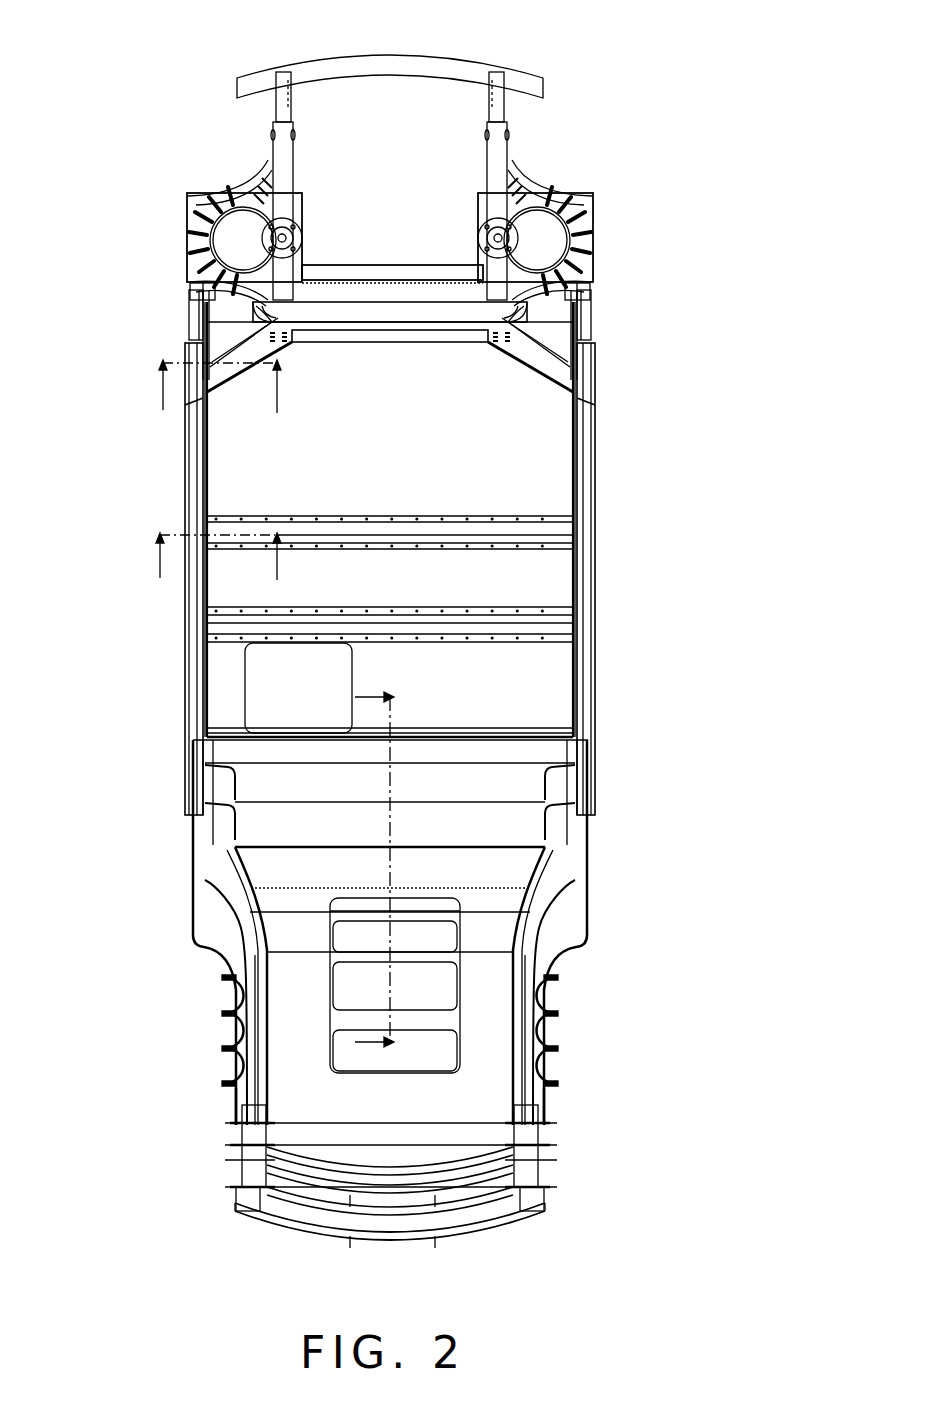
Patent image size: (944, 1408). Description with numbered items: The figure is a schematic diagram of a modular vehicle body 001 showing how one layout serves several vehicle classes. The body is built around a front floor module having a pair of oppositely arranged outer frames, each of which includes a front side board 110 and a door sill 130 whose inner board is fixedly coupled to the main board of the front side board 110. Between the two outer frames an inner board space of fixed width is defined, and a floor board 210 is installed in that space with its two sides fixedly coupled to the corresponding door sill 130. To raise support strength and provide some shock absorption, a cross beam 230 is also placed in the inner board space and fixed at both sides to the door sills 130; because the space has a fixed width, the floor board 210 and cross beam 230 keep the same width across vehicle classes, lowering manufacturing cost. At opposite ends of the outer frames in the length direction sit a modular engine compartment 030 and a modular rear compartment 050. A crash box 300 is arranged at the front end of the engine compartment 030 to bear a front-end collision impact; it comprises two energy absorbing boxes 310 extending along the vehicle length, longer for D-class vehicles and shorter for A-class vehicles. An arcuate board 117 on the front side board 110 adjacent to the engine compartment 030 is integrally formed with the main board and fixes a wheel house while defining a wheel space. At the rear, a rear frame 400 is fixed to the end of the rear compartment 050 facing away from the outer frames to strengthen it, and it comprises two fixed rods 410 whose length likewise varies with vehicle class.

The modular vehicle body 001 is at (97, 28).
The crash box 300 is at (382, 62).
The energy absorbing box 310 is at (280, 105).
The modular engine compartment 030 is at (560, 146).
The arcuate board 117 is at (197, 312).
The front side board 110 is at (578, 366).
The floor board 210 is at (537, 469).
The cross beam 230 is at (538, 540).
The door sill 130 is at (200, 699).
The modular rear compartment 050 is at (283, 869).
The fixed rod 410 is at (527, 1093).
The rear frame 400 is at (316, 1228).